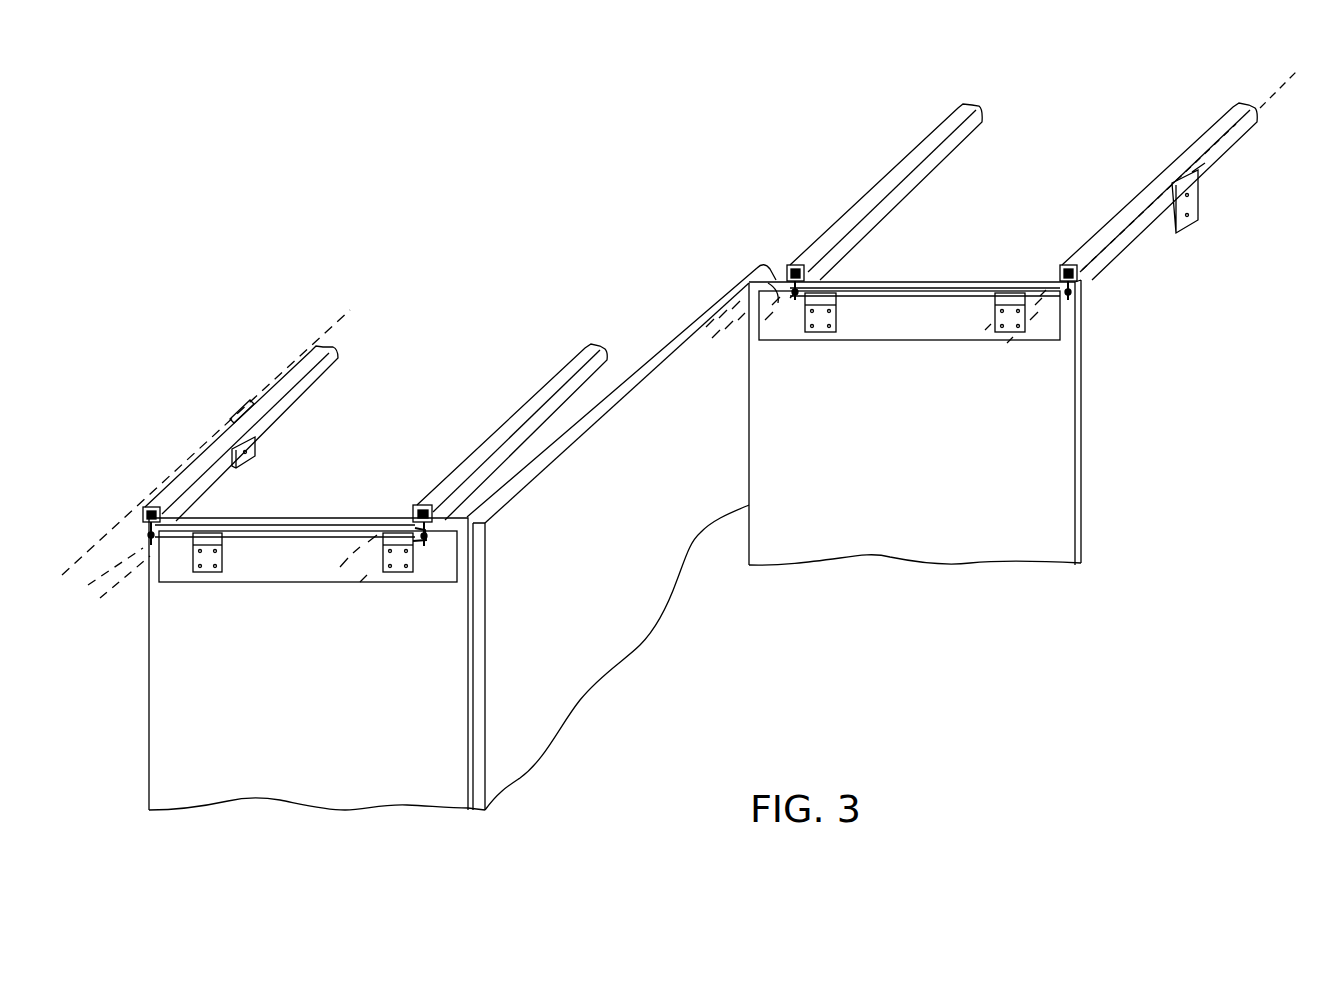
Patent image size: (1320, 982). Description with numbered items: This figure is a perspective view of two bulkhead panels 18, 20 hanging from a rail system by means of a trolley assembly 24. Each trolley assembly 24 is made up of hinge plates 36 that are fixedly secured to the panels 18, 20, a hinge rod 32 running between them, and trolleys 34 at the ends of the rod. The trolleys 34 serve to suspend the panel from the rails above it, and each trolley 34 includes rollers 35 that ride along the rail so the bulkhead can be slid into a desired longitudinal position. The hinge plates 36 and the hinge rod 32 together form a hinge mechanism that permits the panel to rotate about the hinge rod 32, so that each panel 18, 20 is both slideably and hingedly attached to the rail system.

The panel 18 is at (268, 770).
The panel 20 is at (903, 523).
The trolley assembly 24 is at (167, 519).
The hinge rod 32 is at (338, 540).
The trolleys 34 is at (415, 531).
The rollers 35 is at (418, 506).
The hinge plates 36 is at (208, 566).